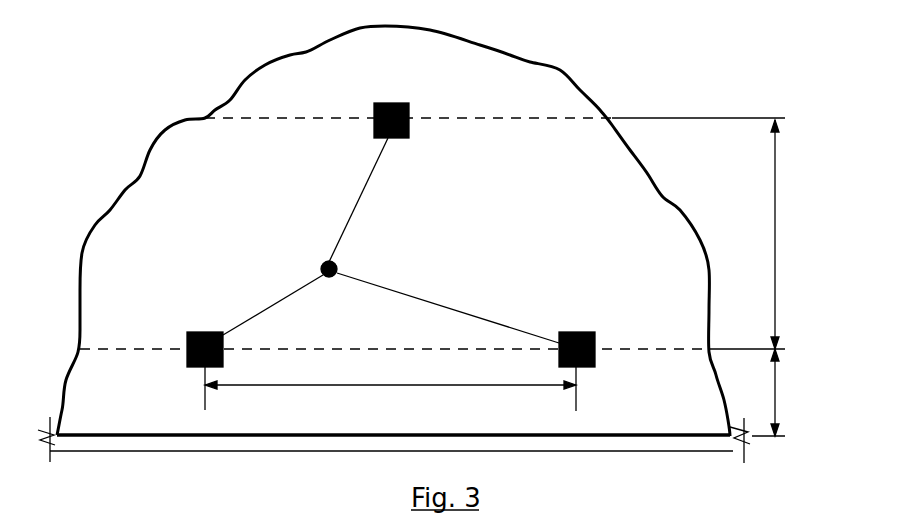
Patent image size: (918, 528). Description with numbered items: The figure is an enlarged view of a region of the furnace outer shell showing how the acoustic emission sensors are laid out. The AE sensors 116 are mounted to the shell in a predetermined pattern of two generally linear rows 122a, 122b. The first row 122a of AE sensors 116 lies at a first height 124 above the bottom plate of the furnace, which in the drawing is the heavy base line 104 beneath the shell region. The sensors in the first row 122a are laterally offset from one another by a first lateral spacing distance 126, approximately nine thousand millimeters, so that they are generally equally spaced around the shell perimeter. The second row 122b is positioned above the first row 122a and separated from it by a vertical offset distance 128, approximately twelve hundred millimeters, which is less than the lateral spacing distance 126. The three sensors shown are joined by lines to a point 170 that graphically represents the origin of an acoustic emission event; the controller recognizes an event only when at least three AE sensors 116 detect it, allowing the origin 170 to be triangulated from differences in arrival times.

The AE sensor 116 is at (396, 103).
The origin of the AE event 170 is at (337, 263).
The first row 122a is at (626, 340).
The second row 122b is at (592, 104).
The vertical offset distance 128 is at (775, 210).
The first height 124 is at (775, 390).
The first lateral spacing distance 126 is at (306, 386).
The surface 104 is at (190, 440).